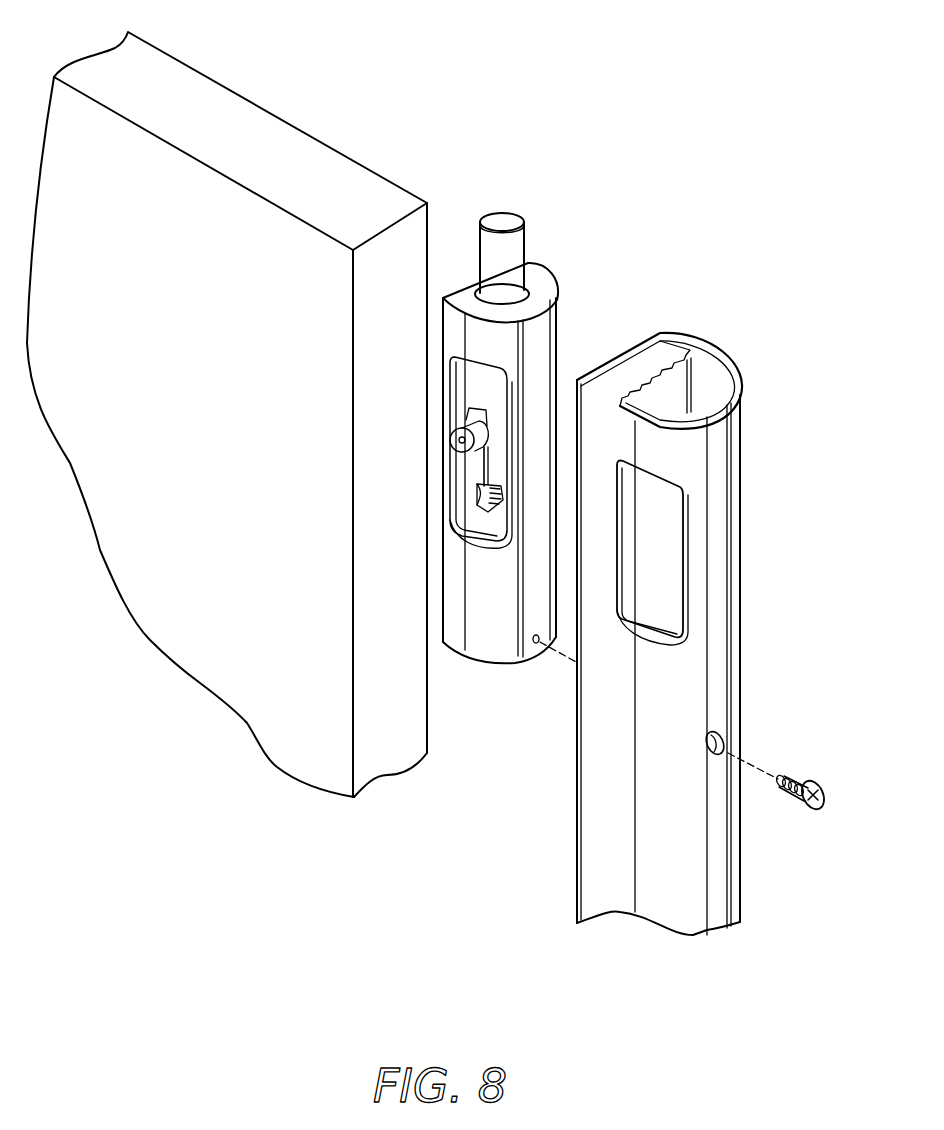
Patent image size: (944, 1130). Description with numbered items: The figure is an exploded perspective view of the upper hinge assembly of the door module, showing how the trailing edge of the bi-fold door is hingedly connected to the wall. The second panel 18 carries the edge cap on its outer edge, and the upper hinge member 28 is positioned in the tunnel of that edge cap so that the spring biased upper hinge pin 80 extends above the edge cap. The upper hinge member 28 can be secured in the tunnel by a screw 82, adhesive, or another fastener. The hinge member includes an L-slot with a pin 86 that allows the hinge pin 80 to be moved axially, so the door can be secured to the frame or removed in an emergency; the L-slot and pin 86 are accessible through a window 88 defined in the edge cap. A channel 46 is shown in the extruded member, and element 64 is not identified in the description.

The second panel 18 is at (295, 165).
The upper hinge pin 80 is at (500, 216).
The upper hinge member 28 is at (695, 577).
The channel 46 is at (650, 343).
The pin 86 is at (463, 420).
The lever 64 is at (473, 477).
The window 88 is at (660, 555).
The screw 82 is at (823, 803).